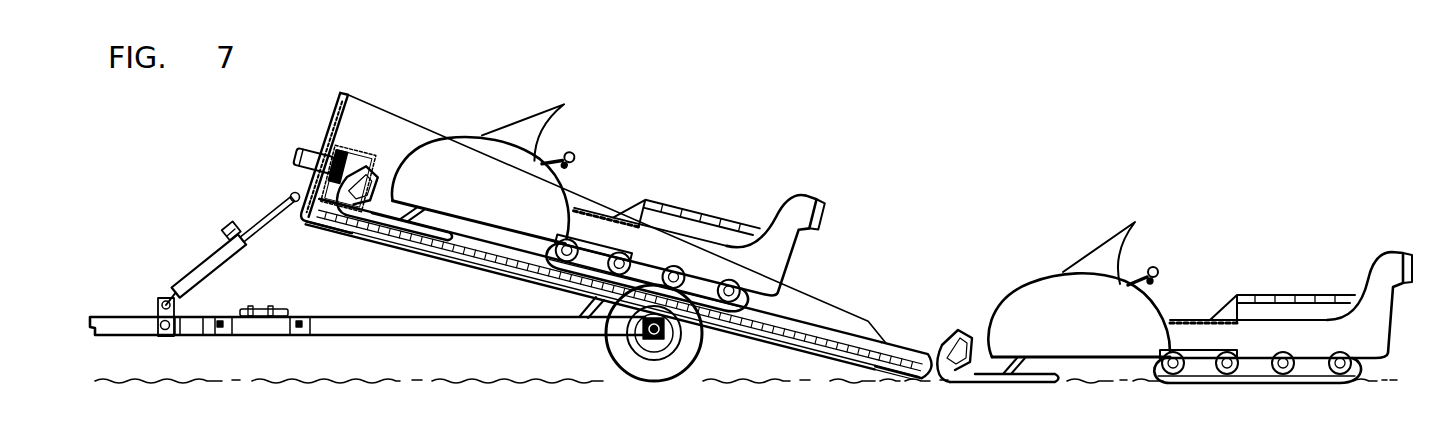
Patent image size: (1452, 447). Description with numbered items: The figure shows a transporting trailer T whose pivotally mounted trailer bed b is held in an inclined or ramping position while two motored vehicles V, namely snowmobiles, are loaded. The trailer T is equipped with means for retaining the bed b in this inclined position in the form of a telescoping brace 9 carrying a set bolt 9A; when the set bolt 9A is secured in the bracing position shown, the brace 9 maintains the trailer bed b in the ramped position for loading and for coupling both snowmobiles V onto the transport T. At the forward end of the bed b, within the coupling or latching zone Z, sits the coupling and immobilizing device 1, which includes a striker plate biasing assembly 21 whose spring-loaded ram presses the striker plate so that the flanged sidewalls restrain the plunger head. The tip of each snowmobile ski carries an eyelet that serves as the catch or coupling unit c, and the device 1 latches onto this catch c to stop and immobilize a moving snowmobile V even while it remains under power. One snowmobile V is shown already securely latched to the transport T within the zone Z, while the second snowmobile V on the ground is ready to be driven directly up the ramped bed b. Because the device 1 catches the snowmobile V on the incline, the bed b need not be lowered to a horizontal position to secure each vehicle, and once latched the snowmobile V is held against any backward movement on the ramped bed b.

The coupling and immobilizing device 1 is at (353, 135).
The striker plate biasing assembly 21 is at (316, 155).
The catch or coupling unit c is at (372, 170).
The telescoping brace 9 is at (197, 267).
The set bolt 9A is at (226, 225).
The trailer T is at (113, 316).
The coupling or latching zone Z is at (333, 220).
The motored vehicle V is at (668, 198).
The trailer bed b is at (890, 360).